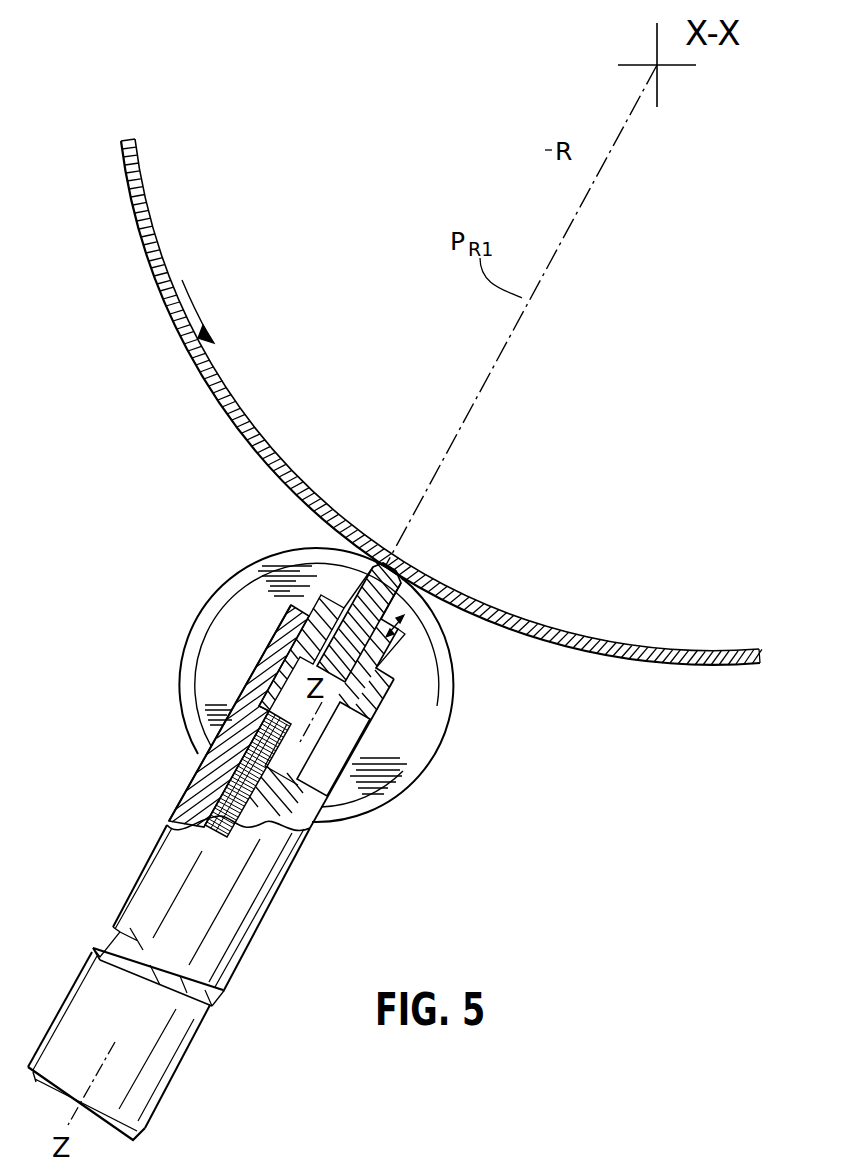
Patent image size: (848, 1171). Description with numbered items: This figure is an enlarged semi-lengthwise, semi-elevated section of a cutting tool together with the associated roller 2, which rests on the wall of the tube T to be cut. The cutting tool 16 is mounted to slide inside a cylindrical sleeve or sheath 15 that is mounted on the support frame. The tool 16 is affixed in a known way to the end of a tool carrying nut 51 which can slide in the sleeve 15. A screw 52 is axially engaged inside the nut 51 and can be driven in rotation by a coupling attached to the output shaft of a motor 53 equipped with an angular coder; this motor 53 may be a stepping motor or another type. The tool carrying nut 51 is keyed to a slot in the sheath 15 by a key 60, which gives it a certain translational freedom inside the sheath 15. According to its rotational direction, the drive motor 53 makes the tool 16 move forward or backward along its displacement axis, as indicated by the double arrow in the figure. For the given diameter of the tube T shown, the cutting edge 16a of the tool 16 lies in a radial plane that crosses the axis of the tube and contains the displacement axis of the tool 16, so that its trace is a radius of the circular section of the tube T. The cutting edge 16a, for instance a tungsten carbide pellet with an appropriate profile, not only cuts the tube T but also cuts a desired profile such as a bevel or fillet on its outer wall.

The roller 2 is at (420, 712).
The cylindrical sleeve or sheath 15 is at (137, 878).
The cutting tool 16 is at (404, 614).
The cutting edge 16a is at (388, 560).
The tool carrying nut 51 is at (280, 660).
The screw 52 is at (242, 757).
The motor 53 is at (170, 1037).
The key 60 is at (340, 757).
The tube T is at (655, 663).